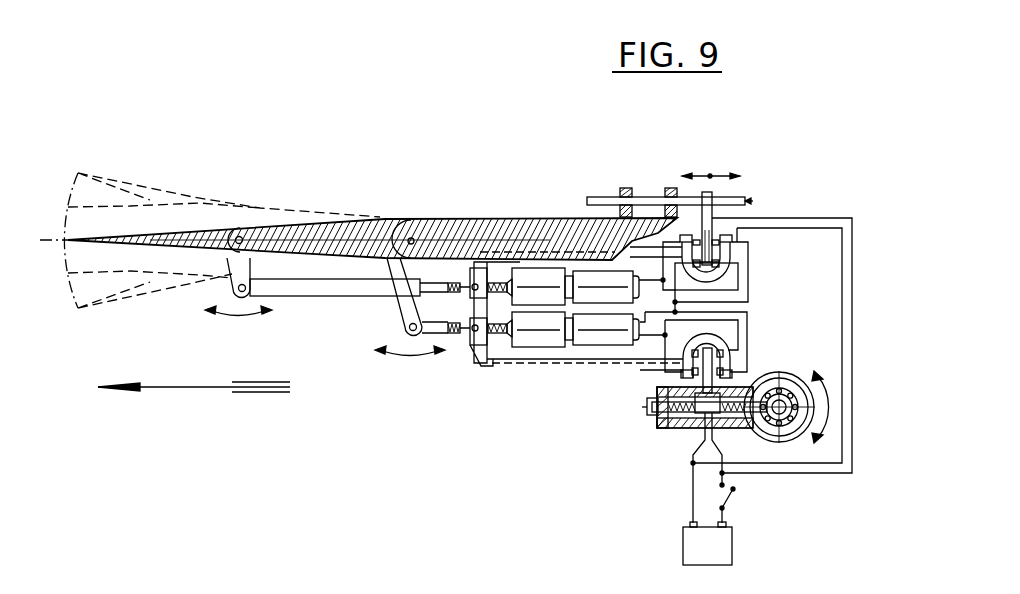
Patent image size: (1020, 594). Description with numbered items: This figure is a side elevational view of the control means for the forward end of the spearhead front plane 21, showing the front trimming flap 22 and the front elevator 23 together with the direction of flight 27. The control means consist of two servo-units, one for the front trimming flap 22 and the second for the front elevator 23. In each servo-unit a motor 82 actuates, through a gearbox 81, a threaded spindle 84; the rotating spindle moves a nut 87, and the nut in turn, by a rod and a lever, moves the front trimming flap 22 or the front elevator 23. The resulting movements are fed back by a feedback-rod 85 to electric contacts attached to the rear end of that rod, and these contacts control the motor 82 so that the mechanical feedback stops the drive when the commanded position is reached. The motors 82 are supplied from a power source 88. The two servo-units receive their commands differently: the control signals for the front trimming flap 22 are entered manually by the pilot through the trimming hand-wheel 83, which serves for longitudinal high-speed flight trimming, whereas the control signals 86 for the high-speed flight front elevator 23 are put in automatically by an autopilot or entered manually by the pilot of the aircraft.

The spearhead front plane 21 is at (493, 228).
The front trimming flap 22 is at (317, 240).
The front elevator 23 is at (167, 238).
The direction of flight 27 is at (189, 387).
The gearbox 81 is at (535, 337).
The motor 82 is at (630, 327).
The hand-wheel 83 is at (788, 375).
The threaded spindle 84 is at (488, 372).
The feedback-rod 85 is at (550, 247).
The control signals 86 is at (710, 176).
The nut 87 is at (472, 333).
The power source 88 is at (695, 548).